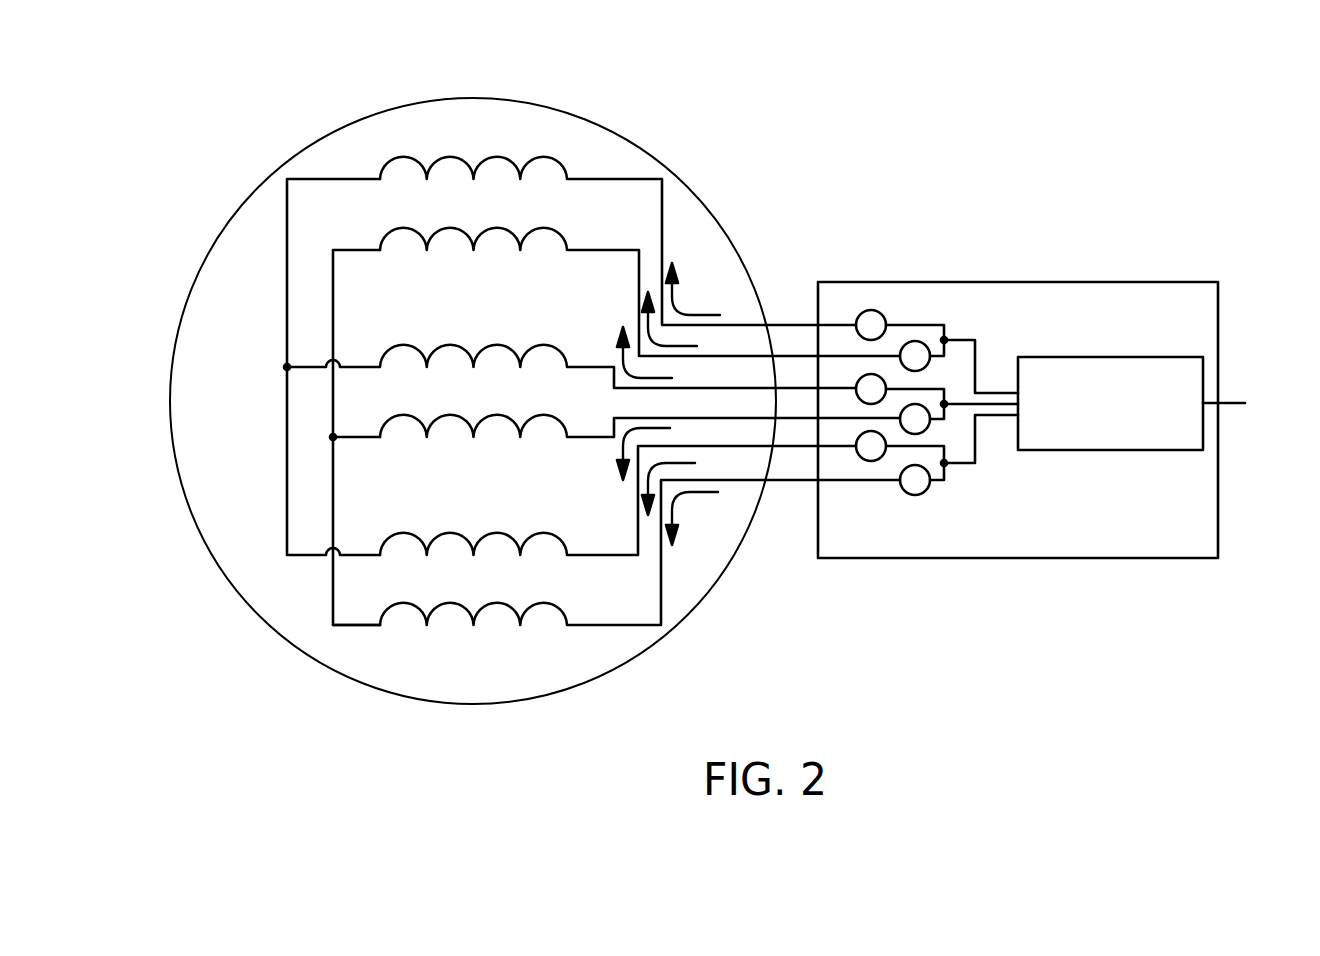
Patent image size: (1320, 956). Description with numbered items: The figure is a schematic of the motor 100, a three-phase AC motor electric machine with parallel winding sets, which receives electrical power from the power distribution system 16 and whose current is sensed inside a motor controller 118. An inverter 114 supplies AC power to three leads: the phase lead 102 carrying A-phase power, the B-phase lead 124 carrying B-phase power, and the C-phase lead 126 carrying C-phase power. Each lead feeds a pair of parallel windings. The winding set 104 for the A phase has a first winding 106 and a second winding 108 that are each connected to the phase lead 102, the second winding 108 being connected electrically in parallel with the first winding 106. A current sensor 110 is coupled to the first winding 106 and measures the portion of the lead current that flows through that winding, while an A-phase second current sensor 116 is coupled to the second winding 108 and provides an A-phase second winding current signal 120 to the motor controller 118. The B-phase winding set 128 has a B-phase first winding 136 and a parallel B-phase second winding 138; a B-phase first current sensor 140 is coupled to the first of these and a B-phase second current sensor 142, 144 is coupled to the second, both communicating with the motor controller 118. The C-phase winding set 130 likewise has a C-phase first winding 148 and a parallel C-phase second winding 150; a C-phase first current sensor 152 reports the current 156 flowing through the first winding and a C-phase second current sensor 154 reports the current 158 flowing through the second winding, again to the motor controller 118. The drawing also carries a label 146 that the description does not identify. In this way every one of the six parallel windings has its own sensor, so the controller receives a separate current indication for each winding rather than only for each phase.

The motor 100 is at (224, 670).
The winding set 104 is at (490, 130).
The first winding 106 is at (560, 157).
The second winding 108 is at (562, 233).
The B-phase first winding 136 is at (393, 343).
The B-phase second winding 138 is at (390, 425).
The C-phase first winding 148 is at (502, 532).
The C-phase second winding 150 is at (550, 603).
The B-phase winding set 128 is at (395, 445).
The C-phase winding set 130 is at (447, 637).
The A-phase second winding current signal 120 is at (680, 307).
The B-phase second current sensor 142 is at (630, 372).
The current flow direction 146 is at (617, 432).
The current 156 is at (648, 480).
The current 158 is at (688, 493).
The current sensor 110 is at (871, 310).
The A-phase second current sensor 116 is at (915, 341).
The B-phase first current sensor 140 is at (860, 378).
The B-phase second current sensor 144 is at (927, 406).
The C-phase first current sensor 152 is at (862, 459).
The C-phase second current sensor 154 is at (913, 494).
The phase lead 102 is at (978, 350).
The B-phase lead 124 is at (1015, 402).
The C-phase lead 126 is at (977, 440).
The inverter 114 is at (1158, 357).
The motor controller 118 is at (1145, 558).
The power distribution system 16 is at (1232, 400).